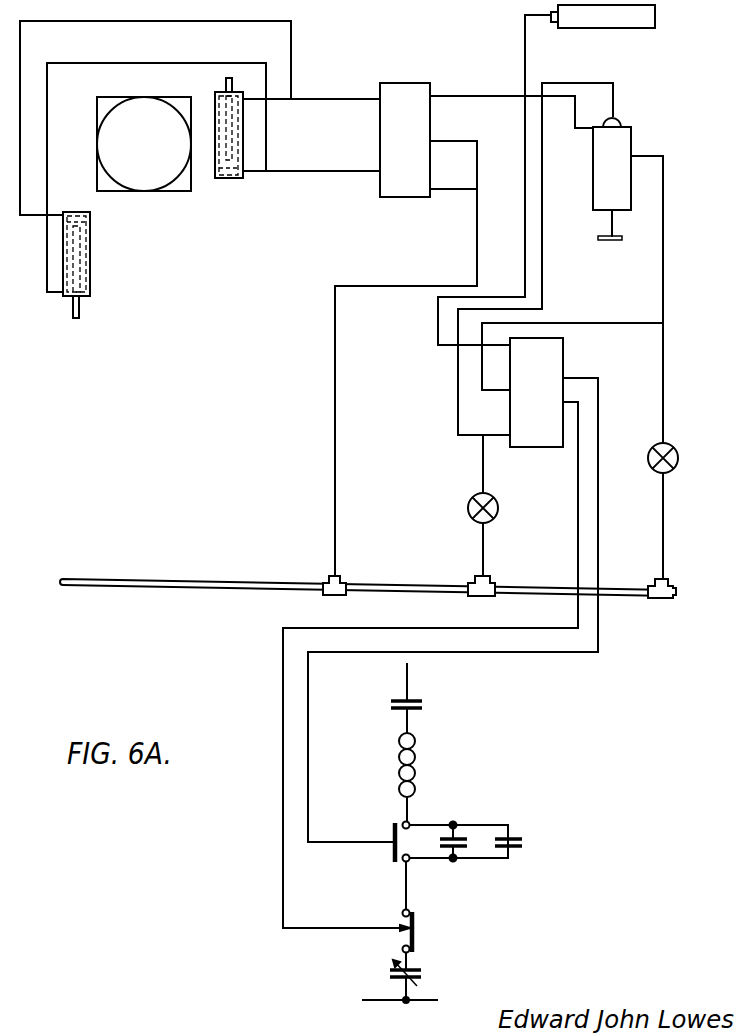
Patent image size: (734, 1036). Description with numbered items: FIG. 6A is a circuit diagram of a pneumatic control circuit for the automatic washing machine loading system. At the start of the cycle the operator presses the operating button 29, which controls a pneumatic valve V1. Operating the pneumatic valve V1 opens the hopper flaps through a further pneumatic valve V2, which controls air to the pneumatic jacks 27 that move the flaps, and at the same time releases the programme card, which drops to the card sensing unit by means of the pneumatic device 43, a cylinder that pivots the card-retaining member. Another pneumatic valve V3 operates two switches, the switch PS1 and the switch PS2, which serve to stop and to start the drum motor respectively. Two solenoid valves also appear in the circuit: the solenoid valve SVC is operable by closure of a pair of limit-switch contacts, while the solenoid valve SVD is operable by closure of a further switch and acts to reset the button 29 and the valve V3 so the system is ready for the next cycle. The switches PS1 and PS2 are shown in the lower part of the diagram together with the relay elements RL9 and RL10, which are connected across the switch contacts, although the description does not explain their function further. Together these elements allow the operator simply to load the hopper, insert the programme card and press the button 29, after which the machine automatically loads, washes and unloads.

The pneumatic jacks 27 is at (227, 179).
The pneumatic device 43 is at (604, 19).
The operating button 29 is at (609, 241).
The pneumatic valve V1 is at (624, 182).
The further pneumatic valve V2 is at (417, 149).
The pneumatic valve V3 is at (548, 401).
The solenoid valve SVC is at (650, 503).
The solenoid valve SVD is at (465, 506).
The switch PS1 is at (425, 931).
The switch PS2 is at (375, 842).
The relay RL9 is at (462, 838).
The relay RL10 is at (400, 977).